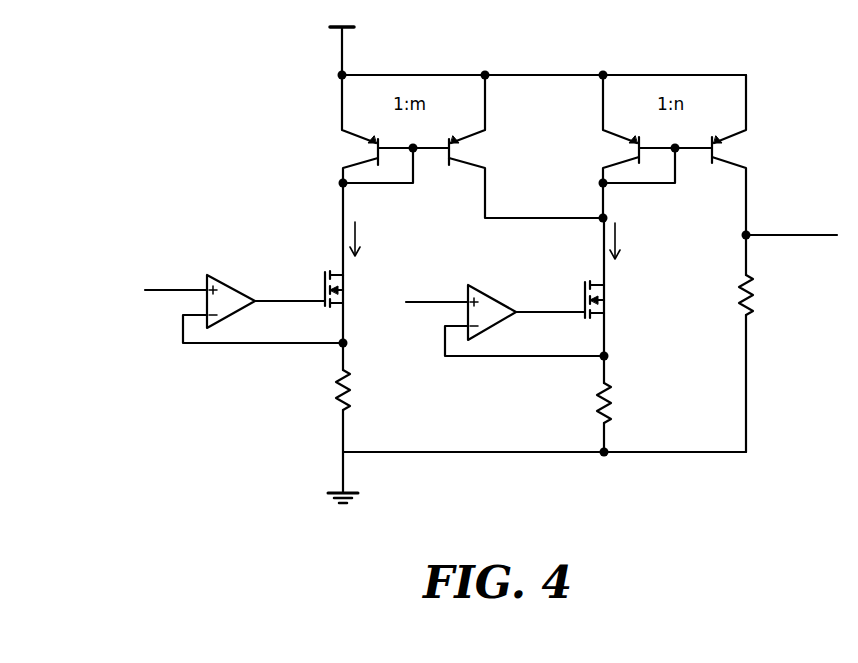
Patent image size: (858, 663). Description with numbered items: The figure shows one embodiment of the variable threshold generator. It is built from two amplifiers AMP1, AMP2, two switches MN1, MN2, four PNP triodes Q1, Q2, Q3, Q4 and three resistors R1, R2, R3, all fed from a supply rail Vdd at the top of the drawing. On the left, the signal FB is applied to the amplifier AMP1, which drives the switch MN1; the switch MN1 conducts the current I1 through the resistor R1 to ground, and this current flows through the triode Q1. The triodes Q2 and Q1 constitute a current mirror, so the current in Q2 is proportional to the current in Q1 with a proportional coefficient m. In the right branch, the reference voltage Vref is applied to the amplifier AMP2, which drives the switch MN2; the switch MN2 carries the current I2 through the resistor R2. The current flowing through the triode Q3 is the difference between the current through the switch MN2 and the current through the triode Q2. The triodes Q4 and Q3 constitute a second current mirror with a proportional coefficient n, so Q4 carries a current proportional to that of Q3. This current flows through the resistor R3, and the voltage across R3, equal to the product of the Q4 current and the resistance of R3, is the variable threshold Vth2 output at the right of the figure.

The supply voltage Vdd is at (362, 51).
The PNP triode Q1 is at (365, 129).
The PNP triode Q2 is at (520, 146).
The PNP triode Q3 is at (629, 129).
The PNP triode Q4 is at (718, 155).
The variable threshold Vth2 is at (790, 226).
The resistor R3 is at (764, 343).
The current I1 is at (365, 239).
The switch MN1 is at (359, 307).
The amplifier AMP1 is at (263, 304).
The feedback signal input FB is at (176, 280).
The resistor R1 is at (364, 418).
The current I2 is at (626, 241).
The switch MN2 is at (621, 287).
The amplifier AMP2 is at (524, 317).
The reference voltage input Vref is at (437, 290).
The resistor R2 is at (624, 404).